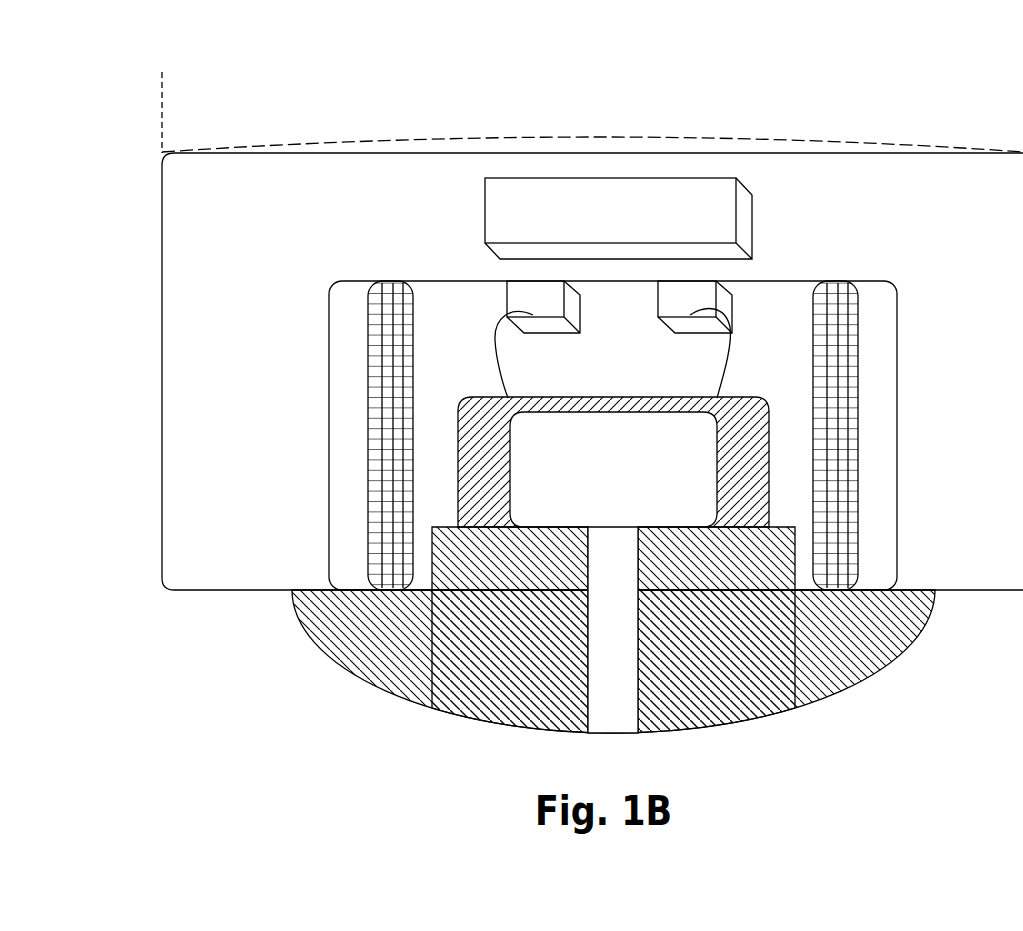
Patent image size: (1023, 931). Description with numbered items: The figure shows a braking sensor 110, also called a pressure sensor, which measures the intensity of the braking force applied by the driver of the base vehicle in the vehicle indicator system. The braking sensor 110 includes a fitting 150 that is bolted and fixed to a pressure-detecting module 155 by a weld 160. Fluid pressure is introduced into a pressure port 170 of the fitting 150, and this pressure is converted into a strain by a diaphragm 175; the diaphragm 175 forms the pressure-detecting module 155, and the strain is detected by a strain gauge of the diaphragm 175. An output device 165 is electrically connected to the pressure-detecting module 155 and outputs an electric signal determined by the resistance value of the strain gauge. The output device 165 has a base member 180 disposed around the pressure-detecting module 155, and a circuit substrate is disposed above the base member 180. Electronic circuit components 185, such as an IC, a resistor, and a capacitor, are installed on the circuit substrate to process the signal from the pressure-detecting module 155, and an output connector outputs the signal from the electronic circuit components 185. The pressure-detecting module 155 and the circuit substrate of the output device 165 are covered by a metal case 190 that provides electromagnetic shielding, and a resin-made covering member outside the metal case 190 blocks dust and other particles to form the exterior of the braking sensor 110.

The braking sensor 110 is at (830, 41).
The fitting 150 is at (505, 605).
The pressure-detecting module 155 is at (458, 462).
The weld 160 is at (443, 523).
The output device 165 is at (946, 217).
The pressure port 170 is at (613, 707).
The diaphragm 175 is at (637, 482).
The base member 180 is at (329, 358).
The electronic circuit components 185 is at (633, 222).
The metal case 190 is at (161, 503).